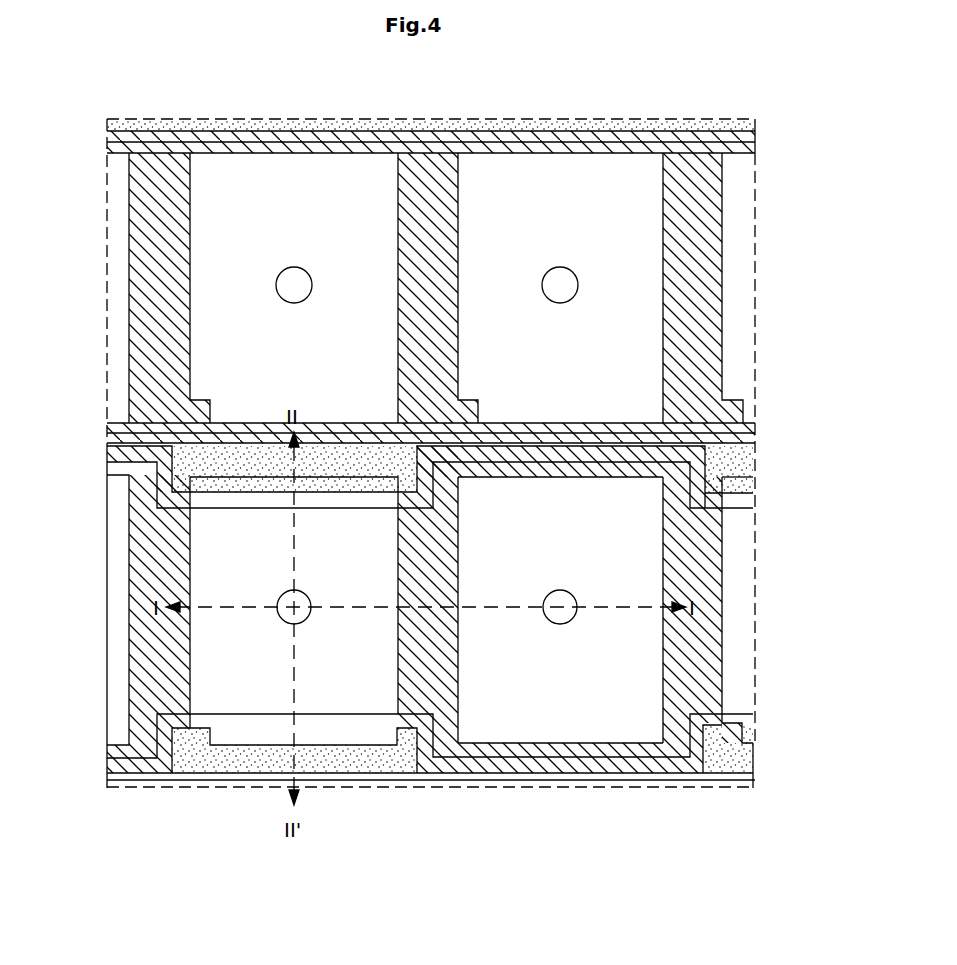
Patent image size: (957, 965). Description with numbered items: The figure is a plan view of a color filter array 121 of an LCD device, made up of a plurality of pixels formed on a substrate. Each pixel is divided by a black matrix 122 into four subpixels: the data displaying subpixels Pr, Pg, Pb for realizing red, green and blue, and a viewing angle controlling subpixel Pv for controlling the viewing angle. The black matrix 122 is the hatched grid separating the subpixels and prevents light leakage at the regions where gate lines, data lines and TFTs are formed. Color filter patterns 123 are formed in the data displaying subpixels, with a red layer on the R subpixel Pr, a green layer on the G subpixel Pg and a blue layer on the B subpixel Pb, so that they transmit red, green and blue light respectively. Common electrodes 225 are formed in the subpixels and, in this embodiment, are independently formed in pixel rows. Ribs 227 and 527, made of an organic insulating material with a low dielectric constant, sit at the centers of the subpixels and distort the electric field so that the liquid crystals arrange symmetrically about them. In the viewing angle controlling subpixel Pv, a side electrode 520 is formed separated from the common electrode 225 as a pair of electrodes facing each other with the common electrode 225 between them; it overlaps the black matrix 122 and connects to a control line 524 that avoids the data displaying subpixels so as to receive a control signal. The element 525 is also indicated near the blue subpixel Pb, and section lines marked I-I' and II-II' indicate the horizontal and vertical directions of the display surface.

The color filter array 121 is at (802, 75).
The black matrix 122 is at (705, 310).
The color filter patterns 123 is at (630, 358).
The control line 524 is at (690, 440).
The side electrode 520 is at (212, 492).
The common electrodes 225 is at (215, 508).
The source electrode 525 is at (640, 513).
The rib 527 is at (283, 622).
The rib 227 is at (572, 620).
The R subpixel Pr is at (200, 243).
The G subpixel Pg is at (648, 243).
The viewing angle controlling subpixel Pv is at (200, 565).
The B subpixel Pb is at (650, 590).